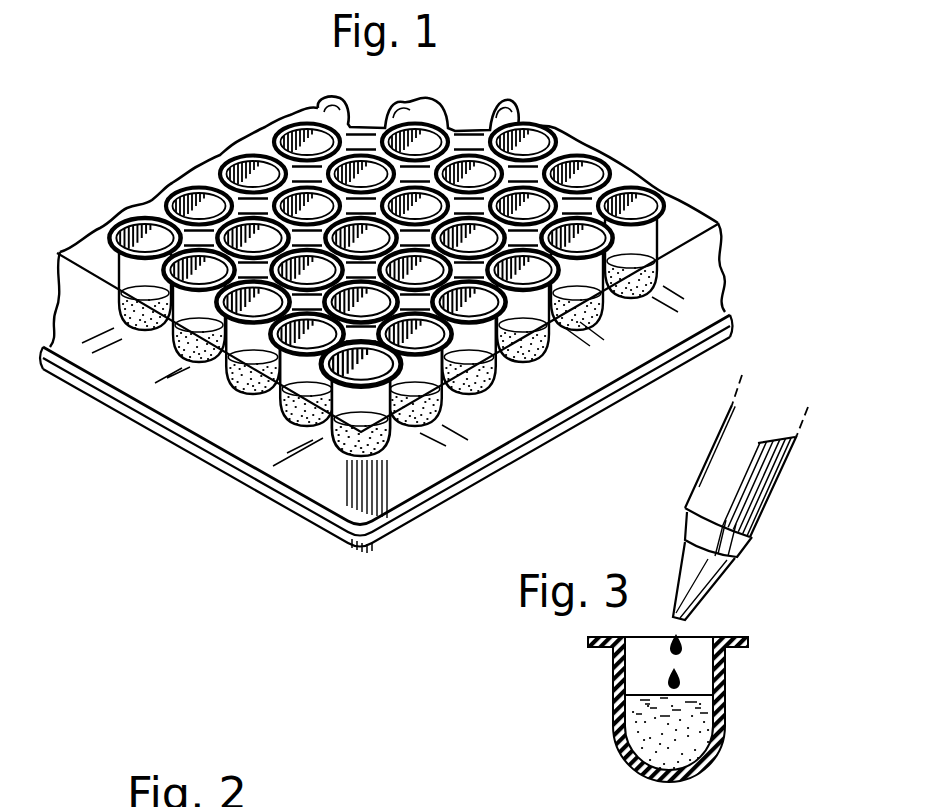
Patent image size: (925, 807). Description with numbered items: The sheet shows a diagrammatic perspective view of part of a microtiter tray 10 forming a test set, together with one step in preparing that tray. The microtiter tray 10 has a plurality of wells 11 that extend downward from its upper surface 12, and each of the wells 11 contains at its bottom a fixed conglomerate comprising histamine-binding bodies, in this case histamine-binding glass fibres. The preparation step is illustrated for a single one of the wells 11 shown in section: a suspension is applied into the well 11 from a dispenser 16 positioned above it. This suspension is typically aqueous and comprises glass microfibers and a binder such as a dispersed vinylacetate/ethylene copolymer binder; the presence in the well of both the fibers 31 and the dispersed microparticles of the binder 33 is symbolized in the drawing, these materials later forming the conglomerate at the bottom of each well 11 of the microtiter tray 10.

In FIG. 1, the microtiter tray 10 is at (386, 309).
In FIG. 1, the wells 11 is at (202, 167).
In FIG. 3, the wells 11 is at (725, 672).
In FIG. 1, the upper surface 12 is at (386, 434).
In FIG. 3, the dispenser 16 is at (770, 495).
In FIG. 3, the fibers 31 is at (721, 711).
In FIG. 3, the dispersed microparticles of the binder 33 is at (698, 735).